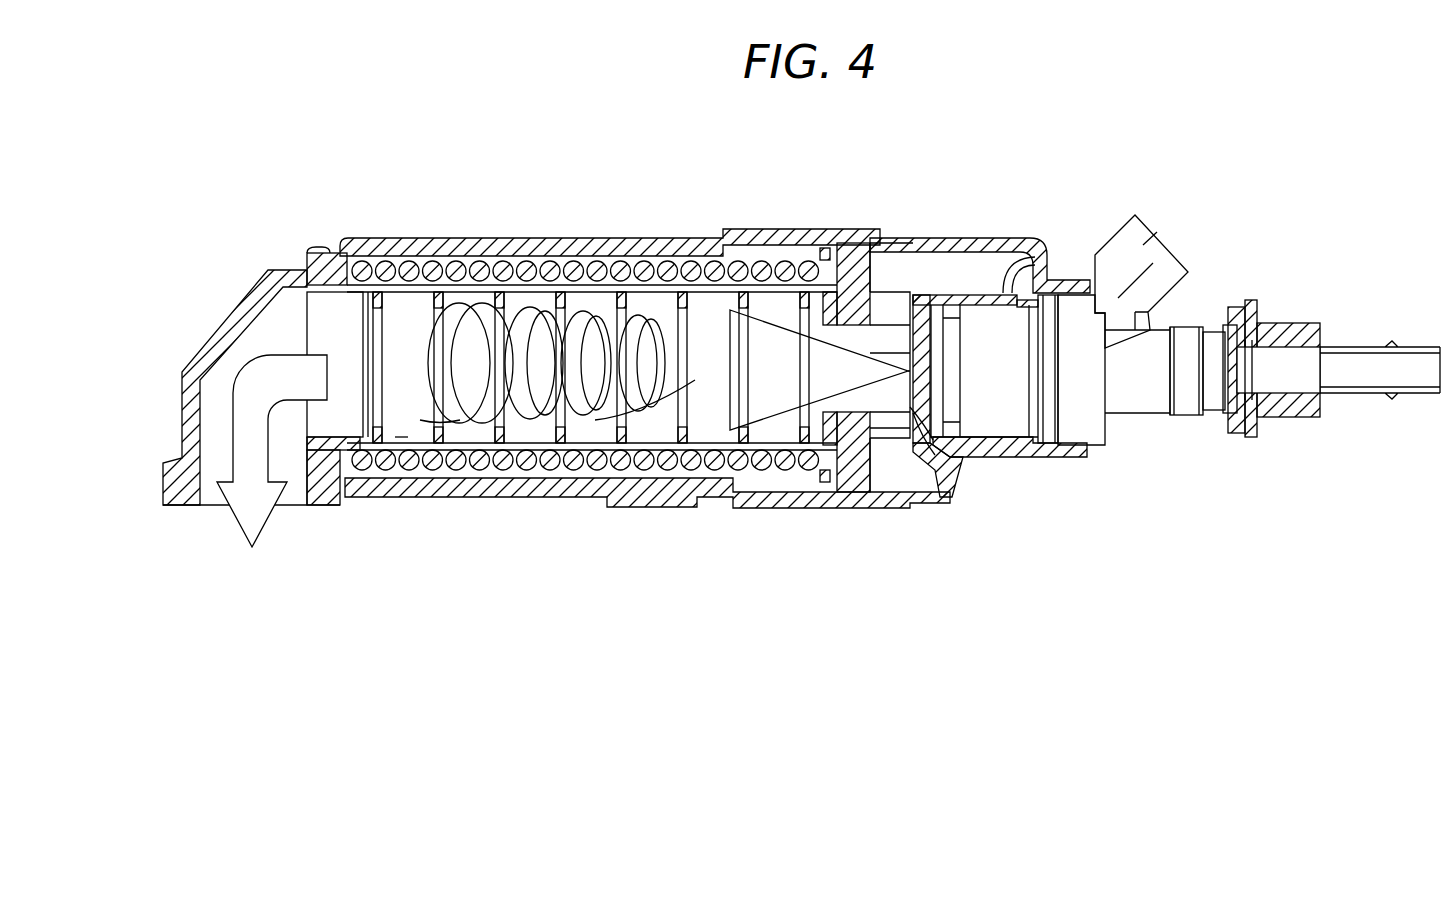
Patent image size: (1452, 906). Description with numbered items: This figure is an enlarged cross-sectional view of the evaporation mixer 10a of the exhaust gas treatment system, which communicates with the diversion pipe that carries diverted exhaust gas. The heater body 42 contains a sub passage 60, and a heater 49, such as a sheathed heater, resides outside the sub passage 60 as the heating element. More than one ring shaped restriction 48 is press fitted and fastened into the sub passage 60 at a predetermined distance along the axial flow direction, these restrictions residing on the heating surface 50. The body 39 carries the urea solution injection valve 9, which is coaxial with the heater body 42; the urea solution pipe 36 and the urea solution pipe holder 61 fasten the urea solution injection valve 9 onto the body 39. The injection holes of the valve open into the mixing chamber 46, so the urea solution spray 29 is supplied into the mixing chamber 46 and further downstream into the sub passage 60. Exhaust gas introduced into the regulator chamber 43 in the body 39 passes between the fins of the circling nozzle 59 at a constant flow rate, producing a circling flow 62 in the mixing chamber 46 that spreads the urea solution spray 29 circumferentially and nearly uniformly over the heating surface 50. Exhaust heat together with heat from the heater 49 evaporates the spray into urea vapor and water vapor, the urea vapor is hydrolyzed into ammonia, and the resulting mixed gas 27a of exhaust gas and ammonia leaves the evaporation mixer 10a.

The evaporation mixer 10a is at (340, 208).
The mixed gas 27a is at (258, 383).
The sub passage 60 is at (340, 327).
The heater body 42 is at (512, 238).
The heating surface 50 is at (408, 440).
The circling flow 62 is at (487, 412).
The heater 49 is at (590, 443).
The restriction 48 is at (660, 482).
The urea solution spray 29 is at (768, 398).
The mixing chamber 46 is at (828, 437).
The regulator chamber 43 is at (887, 478).
The circling nozzle 59 is at (947, 495).
The body 39 is at (960, 238).
The urea solution injection valve 9 is at (1157, 243).
The urea solution pipe holder 61 is at (1250, 445).
The urea solution pipe 36 is at (1338, 400).